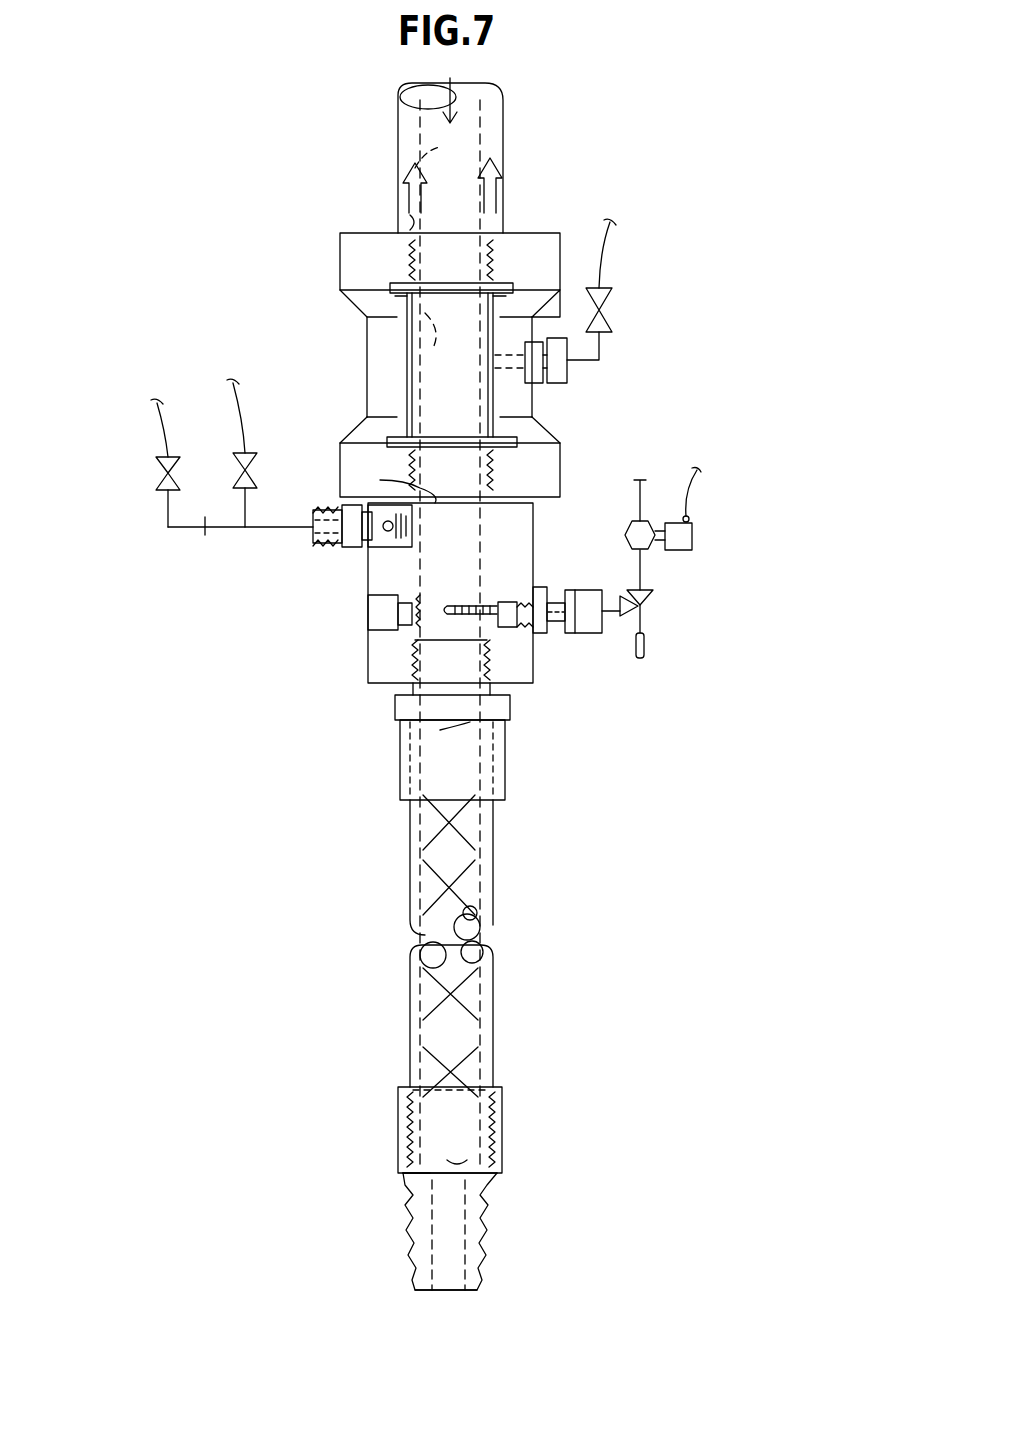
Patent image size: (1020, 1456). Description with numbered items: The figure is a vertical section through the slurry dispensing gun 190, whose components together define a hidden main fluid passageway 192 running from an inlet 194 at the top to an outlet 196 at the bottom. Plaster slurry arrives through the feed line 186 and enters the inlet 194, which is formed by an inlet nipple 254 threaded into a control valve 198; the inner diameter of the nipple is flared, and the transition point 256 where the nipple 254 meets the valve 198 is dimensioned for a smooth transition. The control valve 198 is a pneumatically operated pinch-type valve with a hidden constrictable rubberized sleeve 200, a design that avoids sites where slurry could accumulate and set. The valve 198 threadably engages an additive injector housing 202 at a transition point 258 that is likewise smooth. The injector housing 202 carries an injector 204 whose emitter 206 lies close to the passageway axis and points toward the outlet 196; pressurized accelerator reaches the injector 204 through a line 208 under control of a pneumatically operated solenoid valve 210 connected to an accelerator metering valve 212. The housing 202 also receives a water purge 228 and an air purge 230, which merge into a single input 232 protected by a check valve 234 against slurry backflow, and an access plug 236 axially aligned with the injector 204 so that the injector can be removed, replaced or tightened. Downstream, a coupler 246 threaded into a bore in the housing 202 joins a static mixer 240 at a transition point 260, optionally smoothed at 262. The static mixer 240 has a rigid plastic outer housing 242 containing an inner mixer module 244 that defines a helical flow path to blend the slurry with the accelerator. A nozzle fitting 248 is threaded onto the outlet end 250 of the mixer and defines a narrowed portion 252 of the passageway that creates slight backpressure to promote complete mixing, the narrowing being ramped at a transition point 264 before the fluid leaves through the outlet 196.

The line 186 is at (505, 128).
The dispensing gun 190 is at (705, 130).
The main fluid passageway 192 is at (462, 188).
The inlet 194 is at (395, 126).
The outlet 196 is at (463, 1307).
The control valve 198 is at (543, 412).
The constrictable rubberized sleeve 200 is at (567, 393).
The additive injector housing 202 is at (368, 570).
The injector 204 is at (513, 605).
The emitter 206 is at (410, 687).
The line 208 is at (645, 490).
The pneumatically operated solenoid valve 210 is at (680, 535).
The accelerator metering valve 212 is at (650, 590).
The water purge 228 is at (243, 425).
The air purge 230 is at (162, 436).
The input 232 is at (275, 527).
The check valve 234 is at (393, 480).
The access plug 236 is at (368, 612).
The static mixer 240 is at (500, 850).
The rigid outer housing 242 is at (500, 988).
The inner mixer module 244 is at (443, 880).
The coupler 246 is at (505, 757).
The nozzle fitting 248 is at (503, 1150).
The outlet end 250 is at (457, 1160).
The narrowed portion 252 is at (430, 1183).
The inlet nipple 254 is at (418, 197).
The transition point 256 is at (452, 280).
The transition point 258 is at (452, 450).
The transition point 260 is at (413, 687).
The smoothed location 262 is at (455, 720).
The transition point 264 is at (472, 1180).